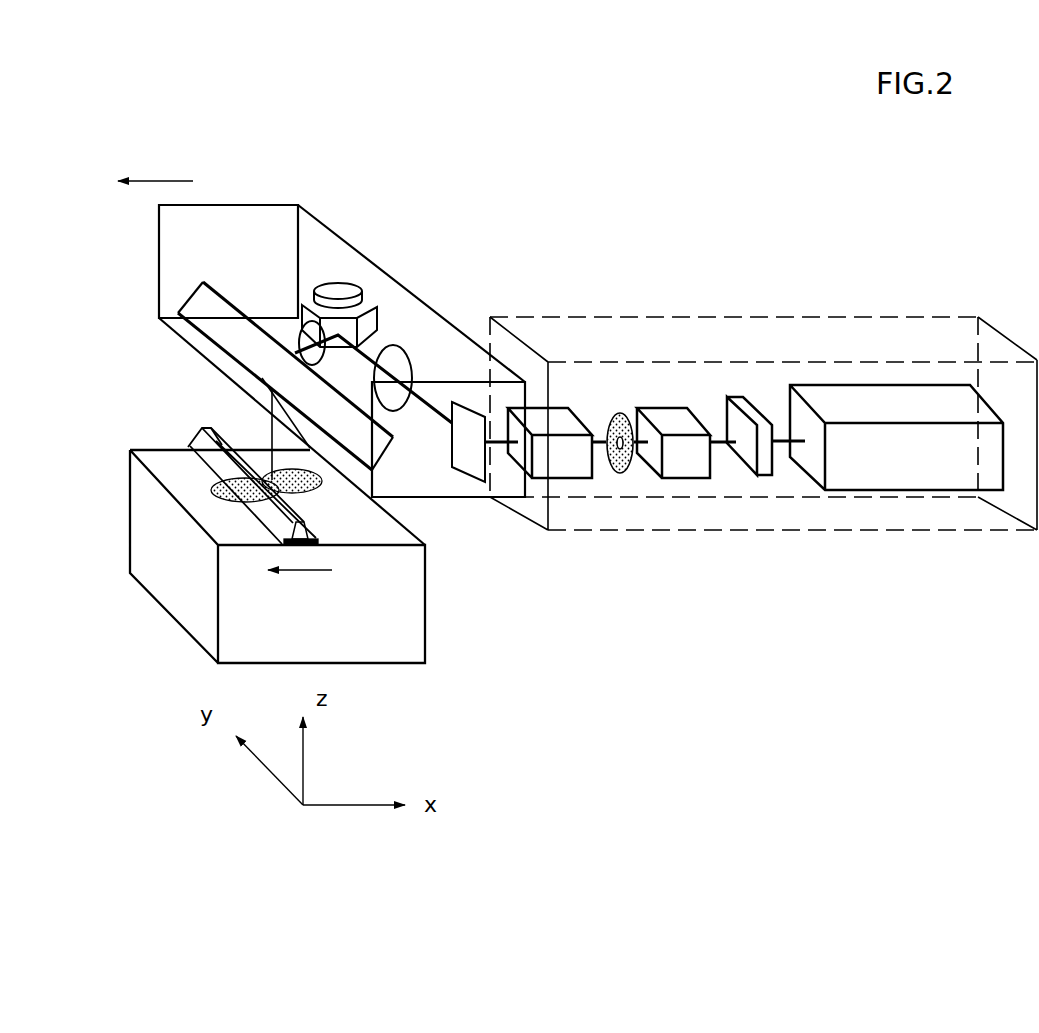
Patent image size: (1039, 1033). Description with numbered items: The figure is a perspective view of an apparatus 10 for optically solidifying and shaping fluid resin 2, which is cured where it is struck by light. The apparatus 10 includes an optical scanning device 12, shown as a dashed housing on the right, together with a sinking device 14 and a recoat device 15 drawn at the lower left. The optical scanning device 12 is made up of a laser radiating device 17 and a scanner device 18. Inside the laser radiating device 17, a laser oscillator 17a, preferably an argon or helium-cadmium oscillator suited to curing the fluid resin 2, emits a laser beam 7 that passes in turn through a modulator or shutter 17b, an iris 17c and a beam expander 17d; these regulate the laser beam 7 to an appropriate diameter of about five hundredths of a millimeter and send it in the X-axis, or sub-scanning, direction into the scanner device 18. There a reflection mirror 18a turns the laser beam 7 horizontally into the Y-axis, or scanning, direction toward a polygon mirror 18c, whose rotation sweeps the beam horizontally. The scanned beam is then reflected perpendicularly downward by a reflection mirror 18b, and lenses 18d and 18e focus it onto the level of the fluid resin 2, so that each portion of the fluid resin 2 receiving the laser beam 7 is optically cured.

The fluid resin 2 is at (368, 532).
The laser beam 7 is at (272, 430).
The apparatus 10 is at (807, 702).
The optical scanning device 12 is at (606, 290).
The sinking device 14 is at (438, 634).
The recoat device 15 is at (184, 424).
The laser radiating device 17 is at (780, 314).
The laser oscillator 17a is at (905, 457).
The modulator or shutter 17b is at (693, 470).
The iris 17c is at (623, 475).
The beam expander 17d is at (573, 465).
The scanner device 18 is at (428, 300).
The reflection mirror 18a is at (473, 458).
The reflection mirror 18b is at (210, 316).
The polygon mirror 18c is at (352, 292).
The lens 18d is at (400, 362).
The lens 18e is at (298, 318).